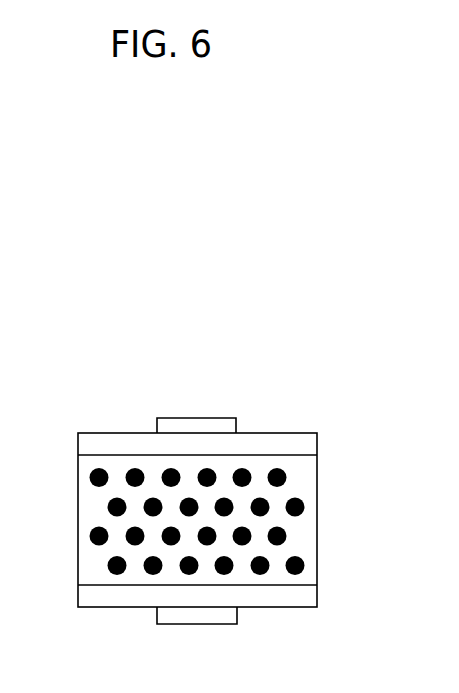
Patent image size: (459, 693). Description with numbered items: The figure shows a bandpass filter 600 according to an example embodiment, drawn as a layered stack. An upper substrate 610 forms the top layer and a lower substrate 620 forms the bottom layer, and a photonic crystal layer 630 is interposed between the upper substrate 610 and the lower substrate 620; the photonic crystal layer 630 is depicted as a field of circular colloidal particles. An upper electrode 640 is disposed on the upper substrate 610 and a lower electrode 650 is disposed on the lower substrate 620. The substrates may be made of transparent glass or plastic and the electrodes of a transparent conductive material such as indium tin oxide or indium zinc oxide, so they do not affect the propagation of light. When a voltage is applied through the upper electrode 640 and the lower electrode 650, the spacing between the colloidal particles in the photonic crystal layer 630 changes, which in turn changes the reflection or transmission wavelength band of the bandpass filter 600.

The bandpass filter 600 is at (216, 340).
The upper substrate 610 is at (80, 438).
The lower substrate 620 is at (80, 594).
The photonic crystal layer 630 is at (76, 455).
The upper electrode 640 is at (198, 418).
The lower electrode 650 is at (197, 626).